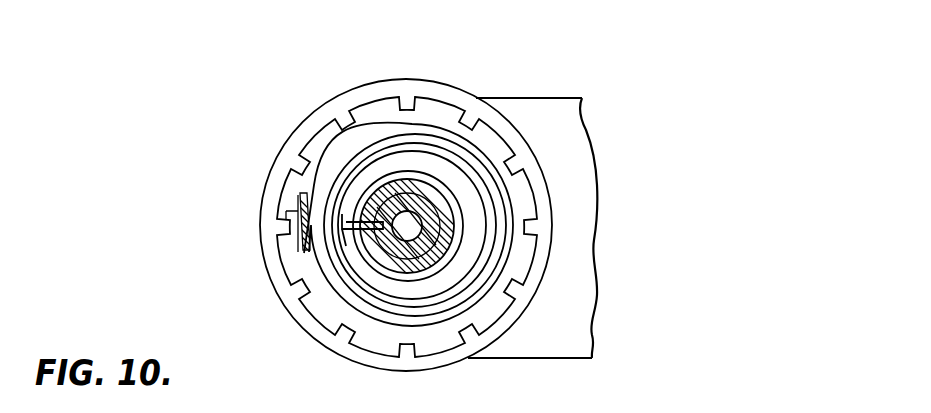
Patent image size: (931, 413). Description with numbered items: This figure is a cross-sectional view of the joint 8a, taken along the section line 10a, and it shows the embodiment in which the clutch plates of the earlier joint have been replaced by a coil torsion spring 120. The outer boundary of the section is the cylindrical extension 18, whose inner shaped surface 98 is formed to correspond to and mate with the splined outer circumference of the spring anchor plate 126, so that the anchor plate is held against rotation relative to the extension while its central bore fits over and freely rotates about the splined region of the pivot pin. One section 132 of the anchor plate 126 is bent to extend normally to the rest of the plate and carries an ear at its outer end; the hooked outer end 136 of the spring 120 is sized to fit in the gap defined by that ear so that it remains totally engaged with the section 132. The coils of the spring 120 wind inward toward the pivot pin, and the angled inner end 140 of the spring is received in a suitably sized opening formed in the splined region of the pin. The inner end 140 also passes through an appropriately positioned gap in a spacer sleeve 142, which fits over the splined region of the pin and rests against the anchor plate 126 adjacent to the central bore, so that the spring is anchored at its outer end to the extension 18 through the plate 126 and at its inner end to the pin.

The joint 8a is at (670, 63).
The section line 10a is at (572, 88).
The cylindrical extension 18 is at (266, 188).
The shaped surface 98 is at (362, 343).
The coil torsion spring 120 is at (342, 283).
The spring anchor plate 126 is at (425, 110).
The section 132 is at (285, 213).
The hooked outer end 136 is at (307, 250).
The angled inner end 140 is at (367, 207).
The spacer sleeve 142 is at (437, 270).